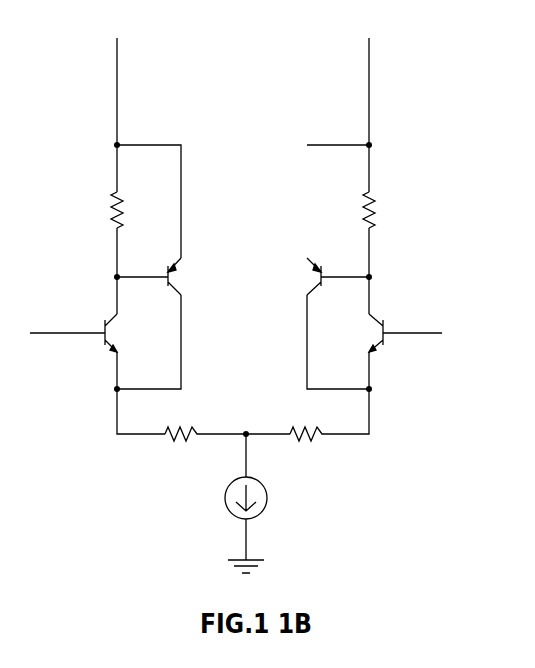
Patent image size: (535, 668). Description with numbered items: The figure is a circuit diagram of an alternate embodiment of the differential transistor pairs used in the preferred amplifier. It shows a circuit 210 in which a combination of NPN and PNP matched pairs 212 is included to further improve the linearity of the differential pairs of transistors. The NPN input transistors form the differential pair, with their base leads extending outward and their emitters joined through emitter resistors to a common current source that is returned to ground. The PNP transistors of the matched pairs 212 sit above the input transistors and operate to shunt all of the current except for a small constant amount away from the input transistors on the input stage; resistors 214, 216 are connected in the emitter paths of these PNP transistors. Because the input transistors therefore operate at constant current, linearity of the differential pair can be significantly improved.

The circuit 210 is at (242, 289).
The combination of NPN and PNP matched pairs 212 is at (214, 203).
The resistor 214 is at (112, 203).
The resistor 216 is at (375, 205).